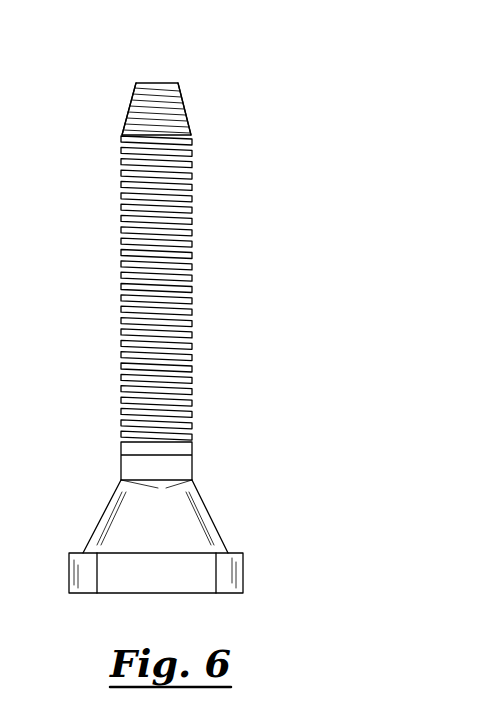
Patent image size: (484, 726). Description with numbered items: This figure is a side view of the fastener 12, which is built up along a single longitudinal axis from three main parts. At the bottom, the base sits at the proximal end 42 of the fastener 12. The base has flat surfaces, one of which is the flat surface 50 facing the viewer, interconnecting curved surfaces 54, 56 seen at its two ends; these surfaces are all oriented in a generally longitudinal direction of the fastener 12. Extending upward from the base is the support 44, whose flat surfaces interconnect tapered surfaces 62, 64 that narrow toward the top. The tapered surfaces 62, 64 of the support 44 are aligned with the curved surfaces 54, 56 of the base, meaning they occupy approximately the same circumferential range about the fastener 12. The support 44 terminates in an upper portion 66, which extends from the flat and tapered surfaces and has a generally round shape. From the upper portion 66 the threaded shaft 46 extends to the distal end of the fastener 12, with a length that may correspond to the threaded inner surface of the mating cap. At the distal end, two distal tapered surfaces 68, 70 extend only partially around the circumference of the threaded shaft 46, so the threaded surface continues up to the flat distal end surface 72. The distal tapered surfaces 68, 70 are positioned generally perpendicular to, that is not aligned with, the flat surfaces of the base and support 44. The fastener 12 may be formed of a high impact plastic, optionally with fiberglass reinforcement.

The fastener 12 is at (235, 243).
The proximal end 42 is at (195, 593).
The support 44 is at (142, 527).
The threaded shaft 46 is at (122, 320).
The flat surface 50 is at (130, 580).
The curved surface 54 is at (78, 572).
The curved surface 56 is at (233, 570).
The tapered surface 62 is at (97, 520).
The tapered surface 64 is at (215, 513).
The upper portion 66 is at (188, 459).
The distal tapered surface 68 is at (130, 103).
The distal tapered surface 70 is at (185, 110).
The flat distal end surface 72 is at (158, 82).